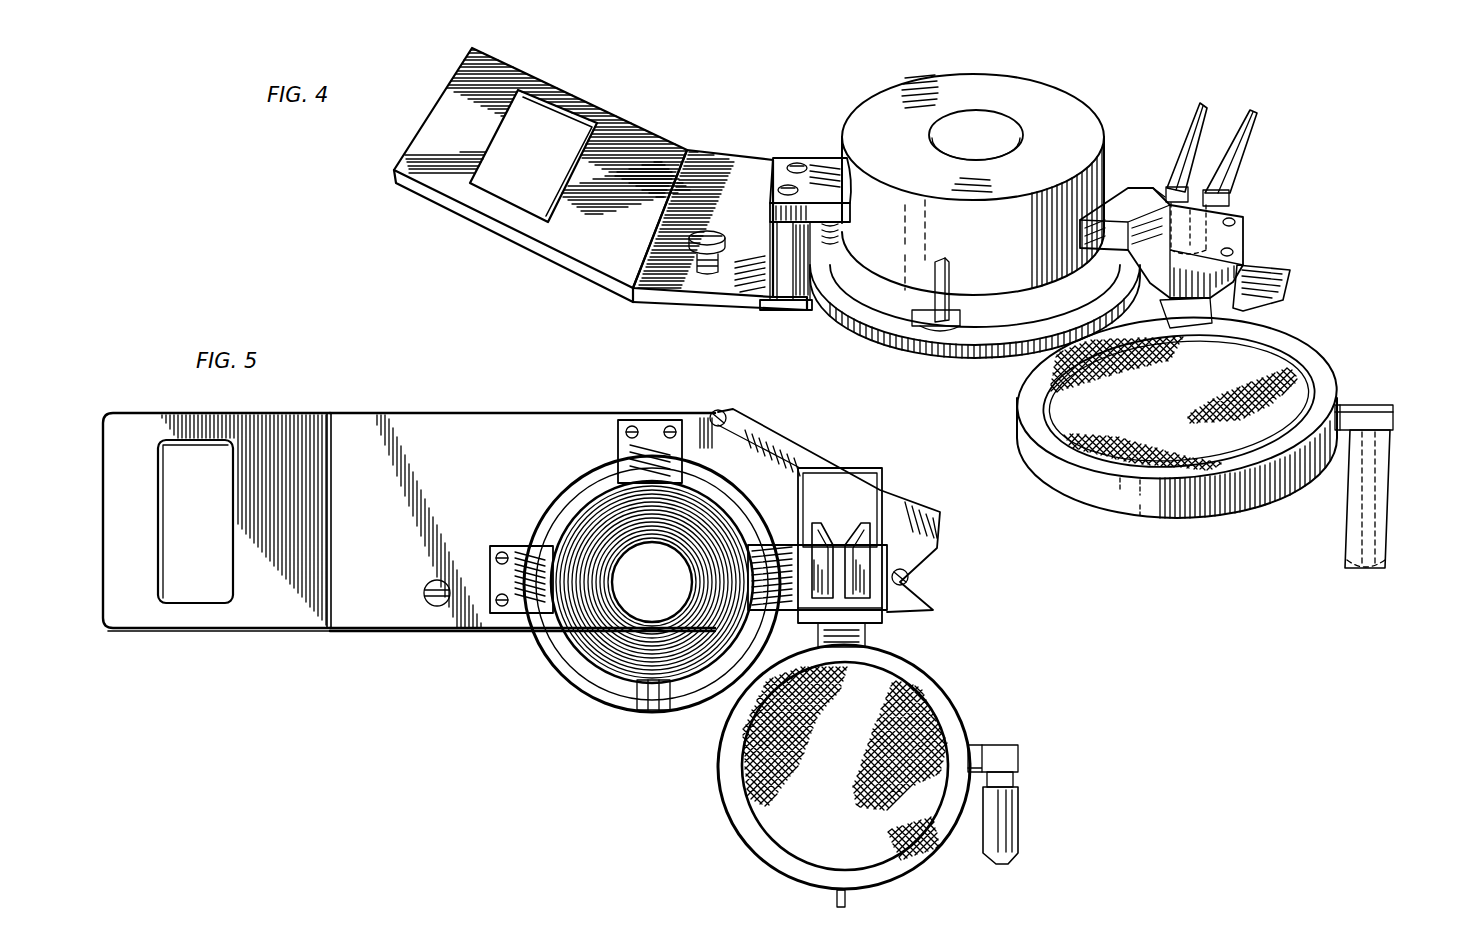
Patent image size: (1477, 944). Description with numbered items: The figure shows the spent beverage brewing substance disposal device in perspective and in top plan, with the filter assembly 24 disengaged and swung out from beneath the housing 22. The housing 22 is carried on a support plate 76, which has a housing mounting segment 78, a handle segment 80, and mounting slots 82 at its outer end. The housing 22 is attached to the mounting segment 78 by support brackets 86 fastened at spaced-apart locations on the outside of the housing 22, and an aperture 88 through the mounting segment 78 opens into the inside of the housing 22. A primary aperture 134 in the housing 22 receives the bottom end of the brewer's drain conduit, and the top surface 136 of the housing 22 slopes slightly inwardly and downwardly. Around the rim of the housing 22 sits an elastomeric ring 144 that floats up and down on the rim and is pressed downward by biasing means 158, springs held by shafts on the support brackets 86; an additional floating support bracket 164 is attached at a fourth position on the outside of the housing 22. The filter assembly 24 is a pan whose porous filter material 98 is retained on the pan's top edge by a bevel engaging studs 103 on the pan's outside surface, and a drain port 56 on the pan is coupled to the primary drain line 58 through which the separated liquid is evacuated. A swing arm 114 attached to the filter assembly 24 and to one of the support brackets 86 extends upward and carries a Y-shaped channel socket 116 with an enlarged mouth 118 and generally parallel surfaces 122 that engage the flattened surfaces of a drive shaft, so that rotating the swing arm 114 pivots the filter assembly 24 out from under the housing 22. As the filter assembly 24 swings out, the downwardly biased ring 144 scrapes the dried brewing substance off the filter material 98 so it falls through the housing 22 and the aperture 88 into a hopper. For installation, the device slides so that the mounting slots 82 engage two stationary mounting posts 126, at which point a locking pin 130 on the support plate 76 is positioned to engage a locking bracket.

In FIG. 4, the housing 22 is at (952, 156).
In FIG. 5, the housing 22 is at (614, 635).
In FIG. 4, the filter assembly 24 is at (1194, 437).
In FIG. 5, the filter assembly 24 is at (900, 776).
In FIG. 4, the drain port 56 is at (1388, 440).
In FIG. 5, the drain port 56 is at (982, 745).
In FIG. 4, the primary drain line 58 is at (1386, 520).
In FIG. 5, the primary drain line 58 is at (1020, 822).
In FIG. 4, the support plate 76 is at (579, 206).
In FIG. 5, the support plate 76 is at (409, 521).
In FIG. 4, the housing mounting segment 78 is at (700, 310).
In FIG. 5, the housing mounting segment 78 is at (372, 605).
In FIG. 4, the handle segment 80 is at (432, 178).
In FIG. 5, the handle segment 80 is at (280, 605).
In FIG. 4, the mounting slots 82 is at (1292, 300).
In FIG. 5, the mounting slots 82 is at (831, 496).
In FIG. 4, the support brackets 86 is at (1051, 213).
In FIG. 5, the support brackets 86 is at (520, 600).
In FIG. 4, the aperture 88 is at (832, 318).
In FIG. 4, the porous filter material 98 is at (1268, 392).
In FIG. 4, the studs 103 is at (1075, 460).
In FIG. 4, the swing arm 114 is at (1185, 312).
In FIG. 5, the swing arm 114 is at (868, 632).
In FIG. 4, the channel socket 116 is at (1236, 152).
In FIG. 5, the channel socket 116 is at (814, 535).
In FIG. 4, the enlarged mouth 118 is at (1232, 145).
In FIG. 5, the enlarged mouth 118 is at (855, 528).
In FIG. 4, the parallel surfaces 122 is at (1187, 160).
In FIG. 5, the parallel surfaces 122 is at (745, 593).
In FIG. 4, the mounting posts 126 is at (1255, 268).
In FIG. 5, the mounting posts 126 is at (714, 412).
In FIG. 4, the locking pin 130 is at (689, 240).
In FIG. 5, the locking pin 130 is at (437, 608).
In FIG. 4, the primary aperture 134 is at (975, 110).
In FIG. 5, the primary aperture 134 is at (594, 553).
In FIG. 4, the top surface 136 is at (905, 96).
In FIG. 5, the top surface 136 is at (585, 500).
In FIG. 4, the ring 144 is at (975, 328).
In FIG. 5, the ring 144 is at (637, 605).
In FIG. 4, the biasing means 158 is at (925, 322).
In FIG. 4, the floating support bracket 164 is at (950, 326).
In FIG. 5, the floating support bracket 164 is at (660, 705).